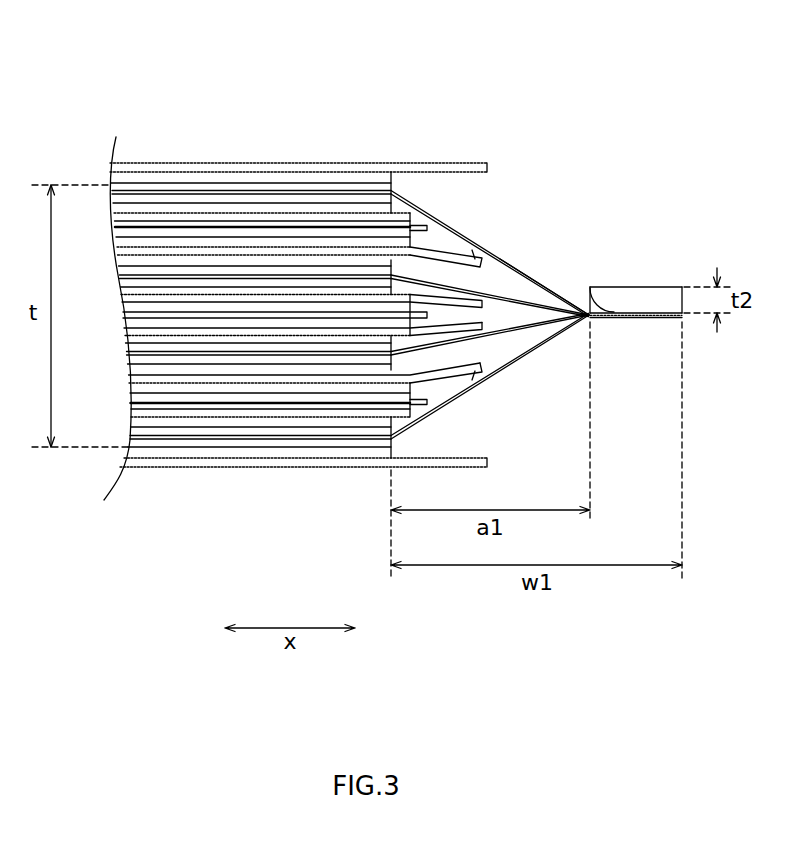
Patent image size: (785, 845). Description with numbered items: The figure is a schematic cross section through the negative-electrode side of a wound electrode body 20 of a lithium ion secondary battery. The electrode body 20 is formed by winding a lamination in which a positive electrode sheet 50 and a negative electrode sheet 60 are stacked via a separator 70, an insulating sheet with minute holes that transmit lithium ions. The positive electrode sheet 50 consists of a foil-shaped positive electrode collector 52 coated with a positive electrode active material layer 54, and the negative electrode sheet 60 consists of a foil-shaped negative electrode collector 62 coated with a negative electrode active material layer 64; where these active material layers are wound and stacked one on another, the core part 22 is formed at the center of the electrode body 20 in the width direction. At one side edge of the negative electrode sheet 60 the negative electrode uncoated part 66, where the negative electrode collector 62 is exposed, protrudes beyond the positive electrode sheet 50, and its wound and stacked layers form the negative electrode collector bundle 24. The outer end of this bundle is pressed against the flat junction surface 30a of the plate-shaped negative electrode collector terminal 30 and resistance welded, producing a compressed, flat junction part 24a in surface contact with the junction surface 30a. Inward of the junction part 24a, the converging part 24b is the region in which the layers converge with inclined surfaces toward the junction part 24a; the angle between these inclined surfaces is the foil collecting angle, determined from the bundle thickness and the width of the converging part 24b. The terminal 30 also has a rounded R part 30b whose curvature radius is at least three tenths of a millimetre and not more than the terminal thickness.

The electrode body 20 is at (509, 124).
The core part 22 is at (368, 160).
The negative electrode collector bundle 24 is at (547, 205).
The junction part 24a is at (625, 287).
The converging part 24b is at (527, 268).
The negative electrode collector terminal 30 is at (663, 287).
The junction surface 30a is at (646, 319).
The R part 30b is at (604, 318).
The positive electrode sheet 50 is at (312, 538).
The positive electrode collector 52 is at (255, 405).
The positive electrode active material layer 54 is at (217, 415).
The negative electrode sheet 60 is at (210, 80).
The negative electrode collector 62 is at (260, 190).
The negative electrode active material layer 64 is at (220, 181).
The negative electrode uncoated part 66 is at (468, 387).
The separator 70 is at (142, 163).